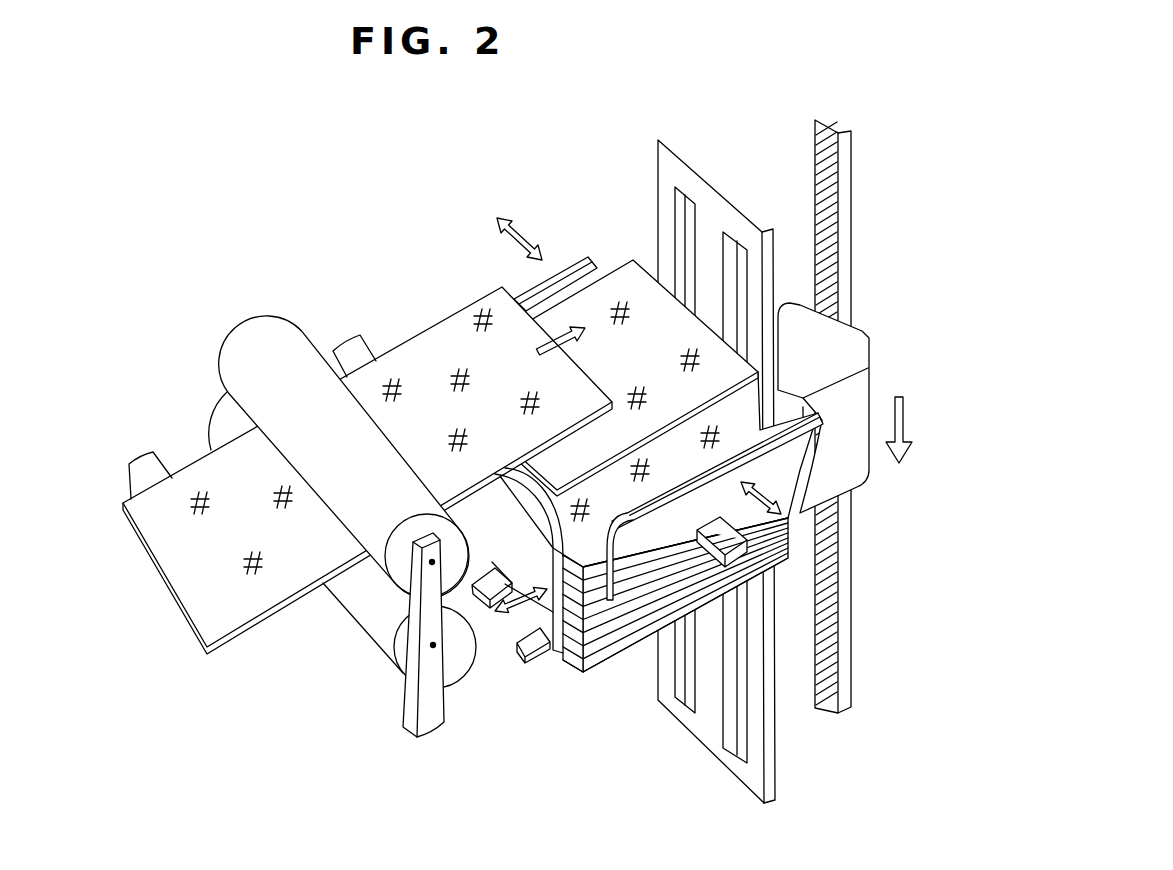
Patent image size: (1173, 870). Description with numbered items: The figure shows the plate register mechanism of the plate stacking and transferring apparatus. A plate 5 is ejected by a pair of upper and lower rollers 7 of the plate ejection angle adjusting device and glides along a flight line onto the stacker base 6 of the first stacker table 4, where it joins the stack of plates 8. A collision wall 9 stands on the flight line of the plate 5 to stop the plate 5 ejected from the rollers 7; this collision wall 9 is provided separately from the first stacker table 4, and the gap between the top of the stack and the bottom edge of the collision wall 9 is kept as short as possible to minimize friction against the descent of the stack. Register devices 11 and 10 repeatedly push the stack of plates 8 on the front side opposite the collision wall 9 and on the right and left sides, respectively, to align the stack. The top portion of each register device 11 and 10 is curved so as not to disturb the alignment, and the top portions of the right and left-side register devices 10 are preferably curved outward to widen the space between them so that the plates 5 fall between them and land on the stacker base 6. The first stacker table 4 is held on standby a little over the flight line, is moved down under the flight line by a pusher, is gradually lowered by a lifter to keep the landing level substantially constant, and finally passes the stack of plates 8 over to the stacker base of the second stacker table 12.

The first stacker table 4 is at (857, 400).
The plate 5 is at (453, 327).
The stacker base 6 is at (522, 660).
The rollers 7 is at (307, 347).
The stack of plates 8 is at (600, 667).
The collision wall 9 is at (672, 143).
The register devices 10 is at (580, 262).
The register device 11 is at (517, 628).
The second stacker table 12 is at (693, 232).